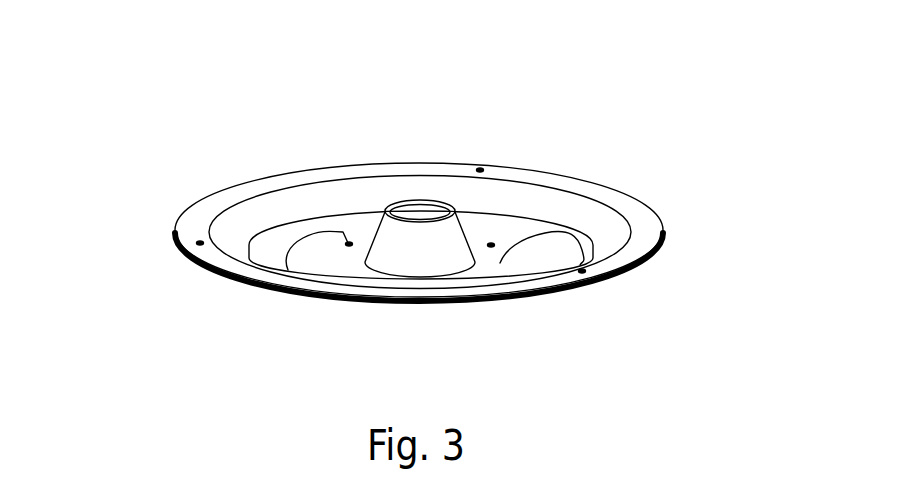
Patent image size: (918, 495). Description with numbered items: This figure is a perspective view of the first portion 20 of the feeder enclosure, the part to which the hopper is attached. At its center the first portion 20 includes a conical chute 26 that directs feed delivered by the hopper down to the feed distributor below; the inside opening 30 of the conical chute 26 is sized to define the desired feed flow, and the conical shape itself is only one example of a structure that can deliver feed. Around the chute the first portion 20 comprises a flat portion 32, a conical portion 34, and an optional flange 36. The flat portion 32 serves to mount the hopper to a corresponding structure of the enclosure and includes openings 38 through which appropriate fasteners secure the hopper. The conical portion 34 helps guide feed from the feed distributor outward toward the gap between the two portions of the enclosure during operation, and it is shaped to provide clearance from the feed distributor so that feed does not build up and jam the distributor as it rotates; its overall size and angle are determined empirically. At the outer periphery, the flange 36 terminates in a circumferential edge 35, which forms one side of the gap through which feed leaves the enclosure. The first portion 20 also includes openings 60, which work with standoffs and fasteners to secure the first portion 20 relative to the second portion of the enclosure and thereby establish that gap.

The first portion 20 is at (565, 200).
The conical chute 26 is at (388, 240).
The inside opening 30 is at (422, 210).
The flat portion 32 is at (560, 223).
The conical portion 34 is at (284, 222).
The circumferential edge 35 is at (637, 210).
The flange 36 is at (202, 218).
The openings 38 is at (292, 237).
The openings 60 is at (482, 169).